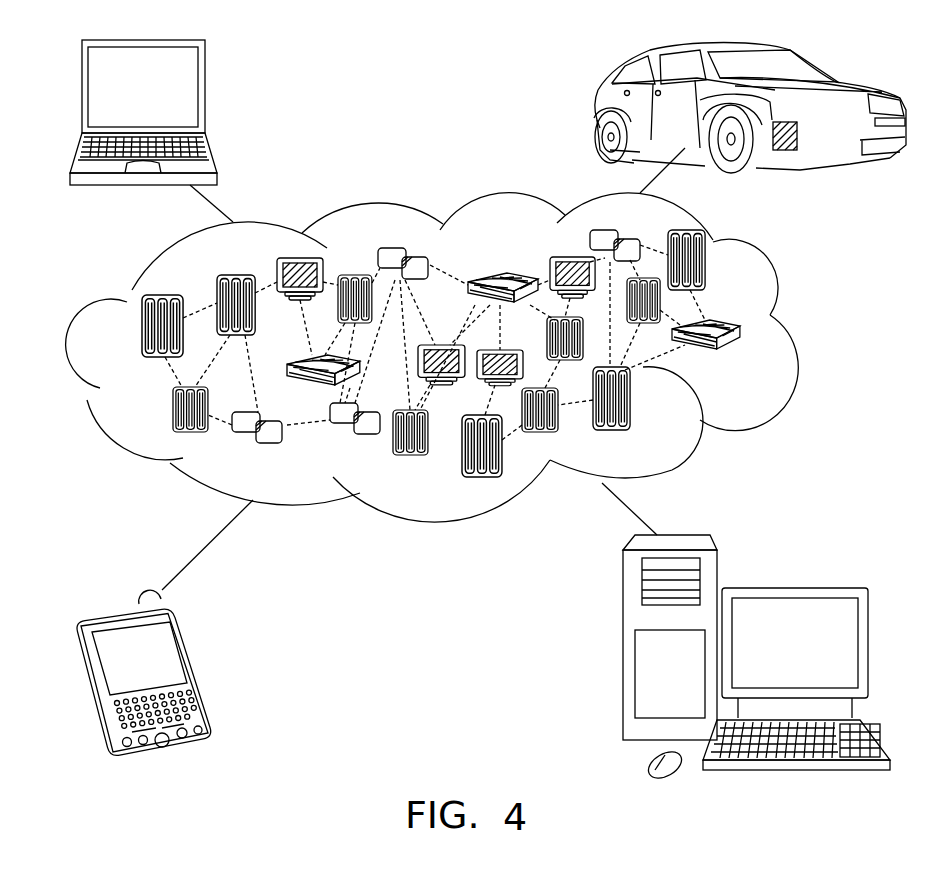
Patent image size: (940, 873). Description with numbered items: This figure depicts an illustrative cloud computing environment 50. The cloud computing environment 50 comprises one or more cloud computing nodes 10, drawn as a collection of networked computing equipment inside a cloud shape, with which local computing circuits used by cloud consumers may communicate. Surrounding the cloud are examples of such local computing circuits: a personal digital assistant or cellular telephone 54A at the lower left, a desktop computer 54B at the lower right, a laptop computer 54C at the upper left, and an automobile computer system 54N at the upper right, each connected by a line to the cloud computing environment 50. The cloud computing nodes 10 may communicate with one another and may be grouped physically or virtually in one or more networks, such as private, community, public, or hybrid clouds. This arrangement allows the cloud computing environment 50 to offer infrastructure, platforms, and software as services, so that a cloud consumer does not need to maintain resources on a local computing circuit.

The laptop computer 54C is at (205, 95).
The automobile computer system 54N is at (598, 108).
The cloud computing environment 50 is at (797, 333).
The cloud computing node 10 is at (757, 367).
The personal digital assistant or cellular telephone 54A is at (197, 668).
The desktop computer 54B is at (792, 588).